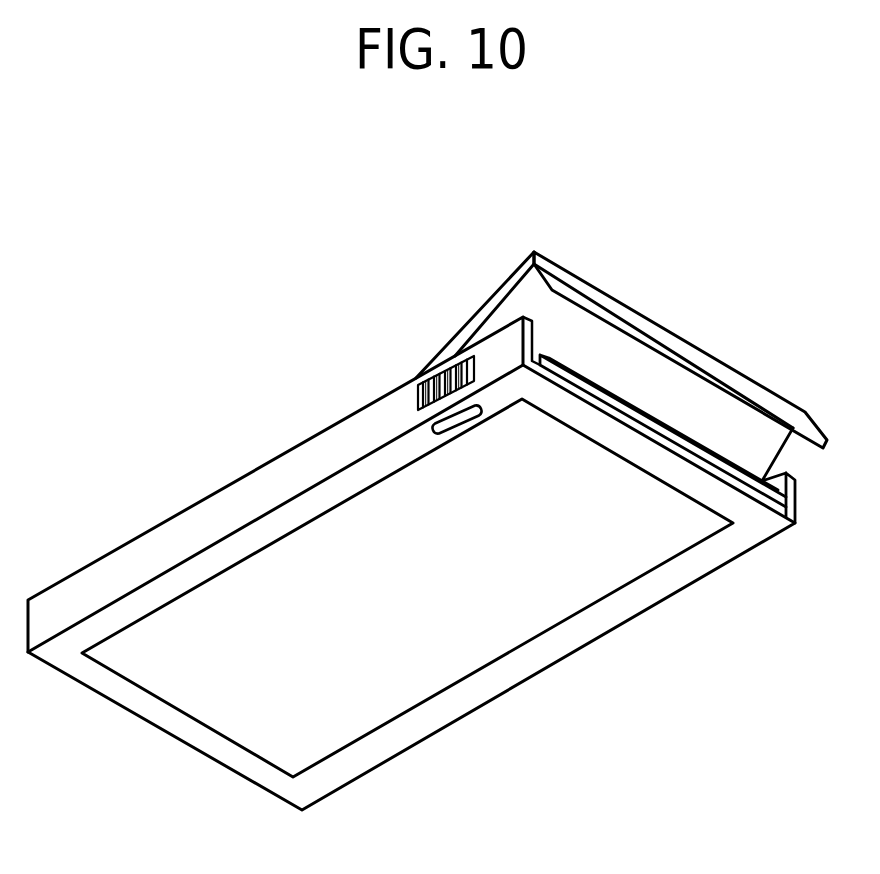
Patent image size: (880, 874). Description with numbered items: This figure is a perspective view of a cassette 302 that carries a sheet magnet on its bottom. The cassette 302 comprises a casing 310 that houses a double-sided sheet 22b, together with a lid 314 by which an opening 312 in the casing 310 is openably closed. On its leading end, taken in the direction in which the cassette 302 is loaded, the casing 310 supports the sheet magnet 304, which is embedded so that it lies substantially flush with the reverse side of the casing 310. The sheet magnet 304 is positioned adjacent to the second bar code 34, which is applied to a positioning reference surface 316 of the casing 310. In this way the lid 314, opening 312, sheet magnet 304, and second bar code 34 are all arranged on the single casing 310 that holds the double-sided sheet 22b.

The cassette 302 is at (427, 495).
The casing 310 is at (590, 617).
The opening 312 is at (575, 343).
The lid 314 is at (497, 293).
The positioning reference surface 316 is at (371, 417).
The second bar code 34 is at (427, 373).
The sheet magnet 304 is at (463, 421).
The double-sided sheet 22b is at (663, 430).